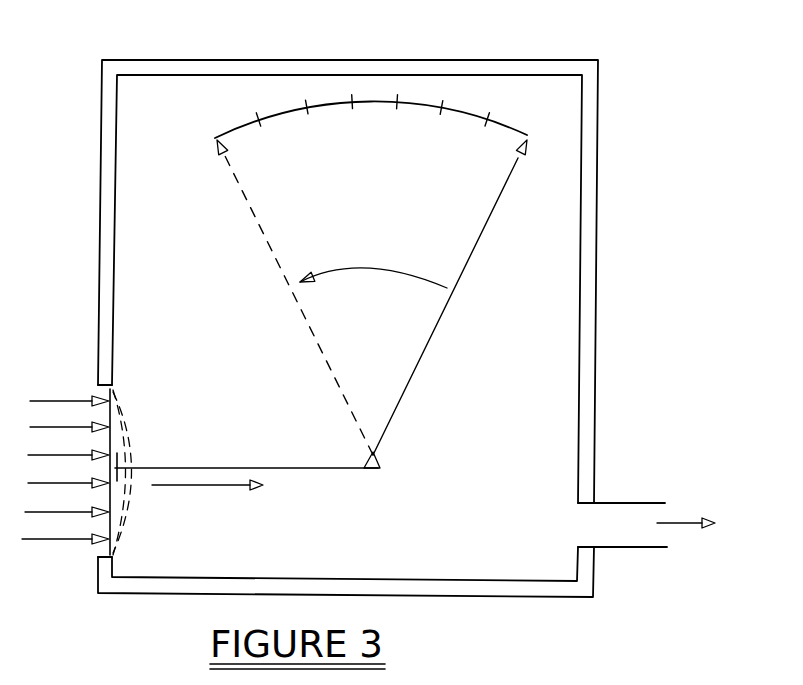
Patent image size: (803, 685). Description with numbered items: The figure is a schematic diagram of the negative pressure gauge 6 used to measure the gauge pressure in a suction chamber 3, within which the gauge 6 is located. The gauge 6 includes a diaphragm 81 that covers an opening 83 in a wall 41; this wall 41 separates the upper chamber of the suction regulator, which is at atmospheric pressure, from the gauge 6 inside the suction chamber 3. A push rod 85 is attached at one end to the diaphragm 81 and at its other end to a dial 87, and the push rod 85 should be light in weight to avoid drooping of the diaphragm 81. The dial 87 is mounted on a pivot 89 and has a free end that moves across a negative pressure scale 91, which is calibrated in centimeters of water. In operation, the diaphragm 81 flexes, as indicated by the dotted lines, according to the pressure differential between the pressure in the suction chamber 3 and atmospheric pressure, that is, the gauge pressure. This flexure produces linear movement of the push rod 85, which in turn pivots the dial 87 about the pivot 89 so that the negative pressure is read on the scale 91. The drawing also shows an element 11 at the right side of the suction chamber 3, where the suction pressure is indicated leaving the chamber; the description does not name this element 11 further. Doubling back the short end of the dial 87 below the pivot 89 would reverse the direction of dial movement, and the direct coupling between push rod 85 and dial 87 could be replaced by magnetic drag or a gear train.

The suction chamber 3 is at (516, 337).
The negative pressure gauge 6 is at (606, 99).
The outlet port 11 is at (650, 500).
The wall 41 is at (100, 107).
The diaphragm 81 is at (98, 397).
The opening 83 is at (95, 552).
The push rod 85 is at (147, 468).
The dial 87 is at (418, 380).
The pivot 89 is at (379, 461).
The negative pressure scale 91 is at (510, 122).